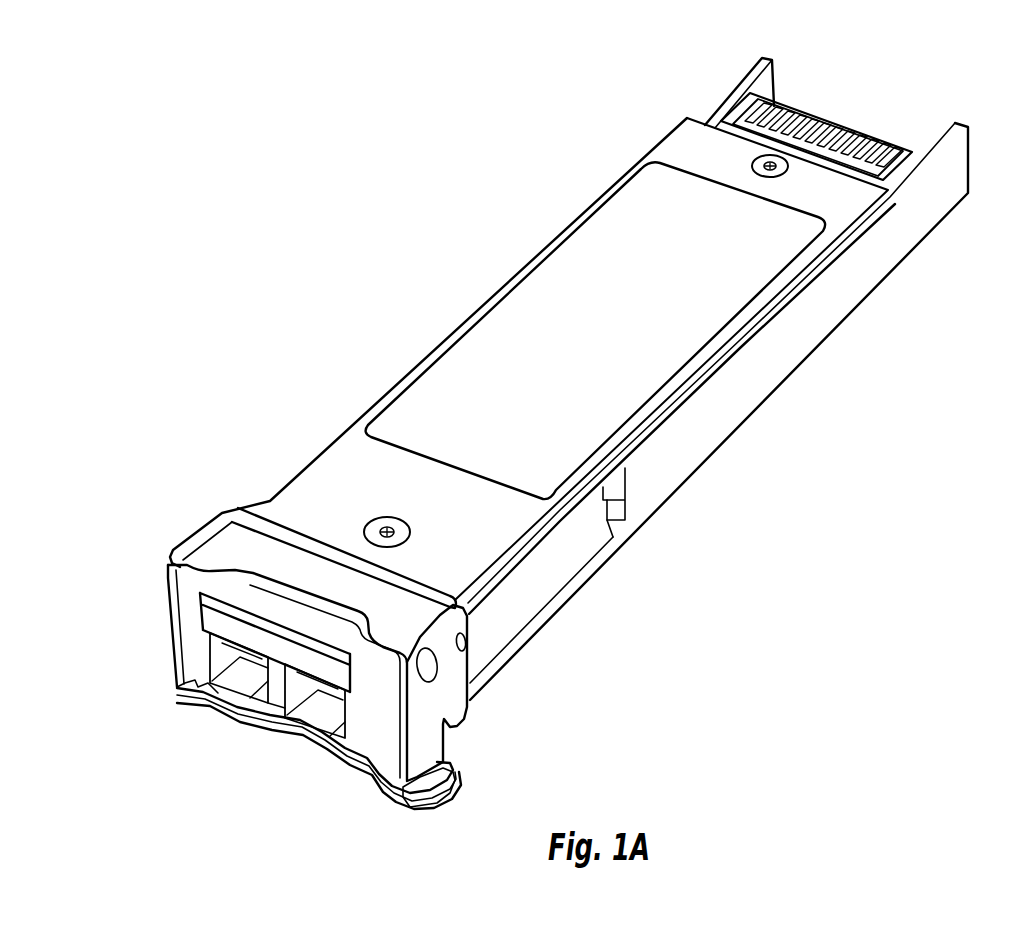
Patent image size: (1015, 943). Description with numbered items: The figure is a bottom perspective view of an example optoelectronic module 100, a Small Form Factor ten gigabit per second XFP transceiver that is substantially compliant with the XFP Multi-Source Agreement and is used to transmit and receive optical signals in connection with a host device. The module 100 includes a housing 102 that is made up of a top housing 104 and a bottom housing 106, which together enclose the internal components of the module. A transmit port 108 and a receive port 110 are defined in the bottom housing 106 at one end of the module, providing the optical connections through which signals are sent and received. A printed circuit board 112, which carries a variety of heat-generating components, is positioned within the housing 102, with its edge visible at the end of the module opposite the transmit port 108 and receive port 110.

The optoelectronic module 100 is at (441, 292).
The housing 102 is at (620, 35).
The top housing 104 is at (745, 87).
The bottom housing 106 is at (683, 133).
The transmit port 108 is at (331, 702).
The receive port 110 is at (252, 677).
The printed circuit board 112 is at (838, 129).